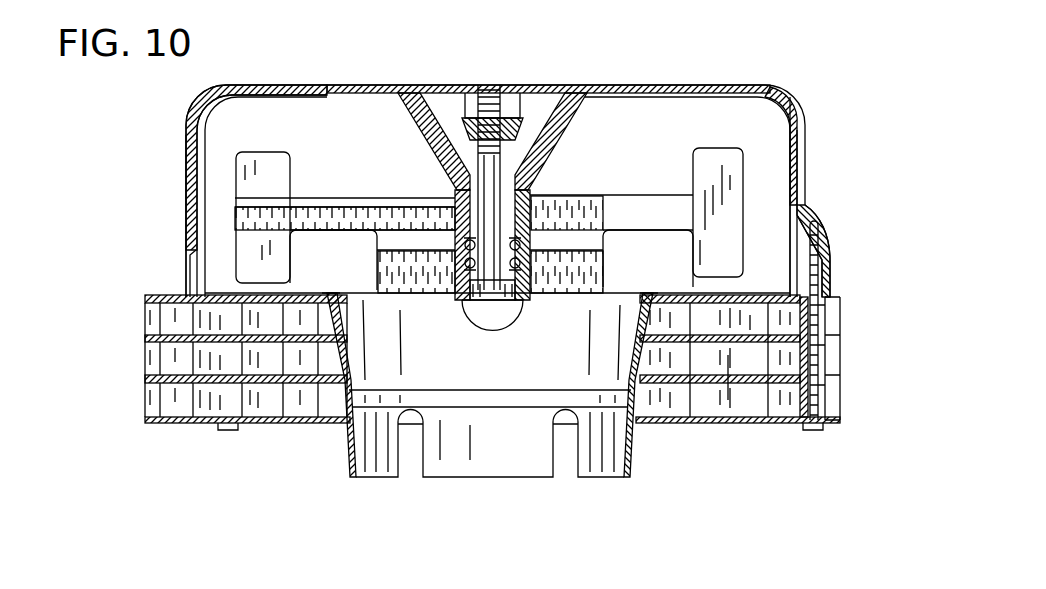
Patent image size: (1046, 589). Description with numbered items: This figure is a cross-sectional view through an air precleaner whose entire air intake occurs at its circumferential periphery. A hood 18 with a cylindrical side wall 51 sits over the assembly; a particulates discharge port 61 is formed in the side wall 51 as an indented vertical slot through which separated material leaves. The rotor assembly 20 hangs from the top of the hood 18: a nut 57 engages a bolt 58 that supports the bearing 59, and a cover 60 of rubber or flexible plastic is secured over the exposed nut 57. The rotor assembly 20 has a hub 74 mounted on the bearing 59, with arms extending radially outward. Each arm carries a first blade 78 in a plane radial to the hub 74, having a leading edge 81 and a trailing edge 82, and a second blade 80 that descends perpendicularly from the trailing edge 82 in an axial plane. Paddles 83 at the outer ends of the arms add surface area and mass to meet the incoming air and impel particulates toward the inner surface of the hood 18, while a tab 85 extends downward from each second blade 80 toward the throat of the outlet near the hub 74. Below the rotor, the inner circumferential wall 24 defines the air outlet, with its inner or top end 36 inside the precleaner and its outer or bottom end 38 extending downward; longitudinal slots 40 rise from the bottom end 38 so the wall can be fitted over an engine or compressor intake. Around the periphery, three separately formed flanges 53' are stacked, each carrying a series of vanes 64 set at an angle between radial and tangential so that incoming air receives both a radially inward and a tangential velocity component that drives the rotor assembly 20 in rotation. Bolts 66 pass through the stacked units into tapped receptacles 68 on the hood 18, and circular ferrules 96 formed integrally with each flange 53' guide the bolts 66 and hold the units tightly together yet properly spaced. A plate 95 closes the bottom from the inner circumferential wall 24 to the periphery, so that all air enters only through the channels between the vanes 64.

The hood 18 is at (800, 135).
The rotor assembly 20 is at (668, 193).
The inner circumferential wall 24 is at (640, 440).
The inner or top end 36 is at (655, 290).
The outer or bottom end 38 is at (362, 478).
The longitudinal slots 40 is at (418, 470).
The cylindrical side wall 51 is at (800, 160).
The flanges 53' is at (432, 340).
The nut 57 is at (465, 125).
The bolt 58 is at (489, 90).
The bearing 59 is at (522, 245).
The cover 60 is at (545, 84).
The particulates discharge port 61 is at (186, 160).
The vanes 64 is at (737, 315).
The bolts 66 is at (222, 430).
The tapped receptacles 68 is at (826, 218).
The hub 74 is at (462, 300).
The first blade 78 is at (322, 198).
The second blade 80 is at (354, 240).
The leading edge 81 is at (382, 205).
The trailing edge 82 is at (624, 200).
The paddles 83 is at (245, 223).
The tab 85 is at (428, 295).
The plate 95 is at (302, 424).
The circular ferrules 96 is at (830, 318).